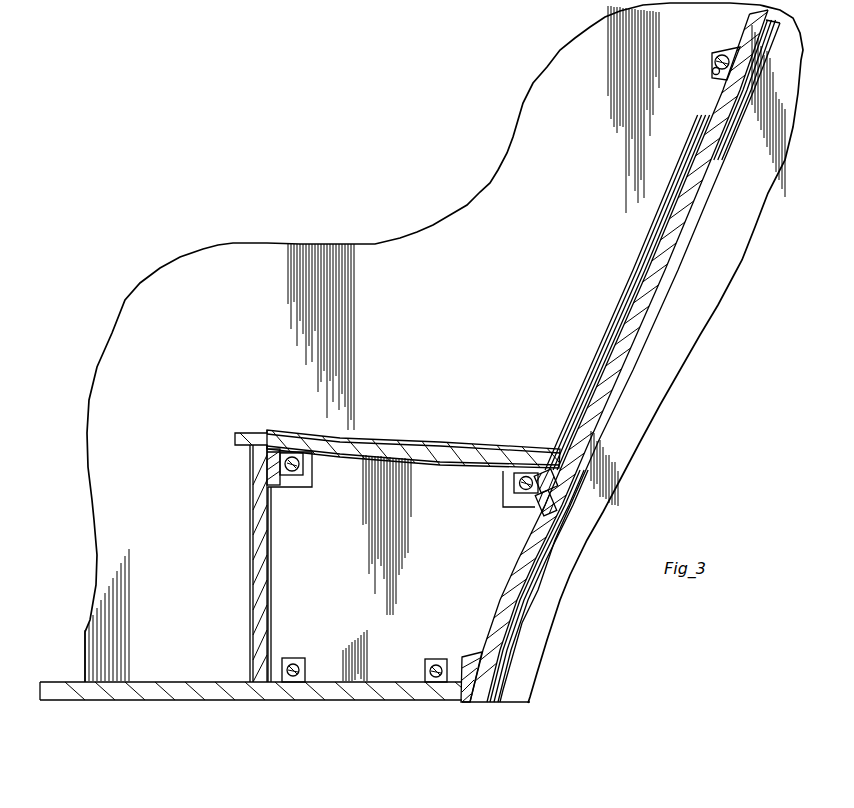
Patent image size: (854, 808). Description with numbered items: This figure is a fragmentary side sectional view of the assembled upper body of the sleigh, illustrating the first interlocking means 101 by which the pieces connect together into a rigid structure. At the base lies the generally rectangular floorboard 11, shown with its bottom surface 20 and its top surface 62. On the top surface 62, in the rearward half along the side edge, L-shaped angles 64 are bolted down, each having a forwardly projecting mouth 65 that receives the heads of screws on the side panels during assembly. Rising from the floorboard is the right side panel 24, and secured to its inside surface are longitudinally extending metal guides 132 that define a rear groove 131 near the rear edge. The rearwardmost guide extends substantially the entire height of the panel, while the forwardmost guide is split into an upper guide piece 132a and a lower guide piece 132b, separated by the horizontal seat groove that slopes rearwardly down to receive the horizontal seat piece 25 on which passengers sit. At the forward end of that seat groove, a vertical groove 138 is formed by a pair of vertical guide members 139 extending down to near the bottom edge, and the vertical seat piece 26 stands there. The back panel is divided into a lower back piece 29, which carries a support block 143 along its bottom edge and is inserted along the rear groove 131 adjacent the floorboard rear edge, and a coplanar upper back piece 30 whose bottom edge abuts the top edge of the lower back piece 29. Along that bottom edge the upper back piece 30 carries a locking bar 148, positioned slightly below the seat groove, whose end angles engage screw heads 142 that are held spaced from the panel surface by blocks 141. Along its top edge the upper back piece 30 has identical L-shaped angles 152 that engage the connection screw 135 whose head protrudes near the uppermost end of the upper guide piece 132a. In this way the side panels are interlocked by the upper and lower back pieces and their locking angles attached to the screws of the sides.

The first interlocking means 101 is at (88, 349).
The right side panel 24 is at (305, 243).
The horizontal seat piece 25 is at (404, 443).
The L-shaped angle 152 is at (724, 52).
The connection screw 135 is at (712, 62).
The guide 132 is at (704, 205).
The upper guide piece 132a is at (665, 243).
The upper back piece 30 is at (613, 356).
The rear groove 131 is at (604, 372).
The screw head 142 is at (305, 466).
The block 141 is at (298, 489).
The locking bar 148 is at (540, 506).
The lower back piece 29 is at (530, 562).
The lower guide piece 132b is at (510, 600).
The support block 143 is at (473, 657).
The L-shaped angle 64 is at (306, 666).
The forwardly projecting mouth 65 is at (282, 667).
The vertical guide member 139 is at (250, 547).
The vertical seat piece 26 is at (231, 563).
The vertical groove 138 is at (260, 604).
The top surface 62 is at (134, 682).
The bottom surface 20 is at (285, 710).
The floorboard 11 is at (276, 688).